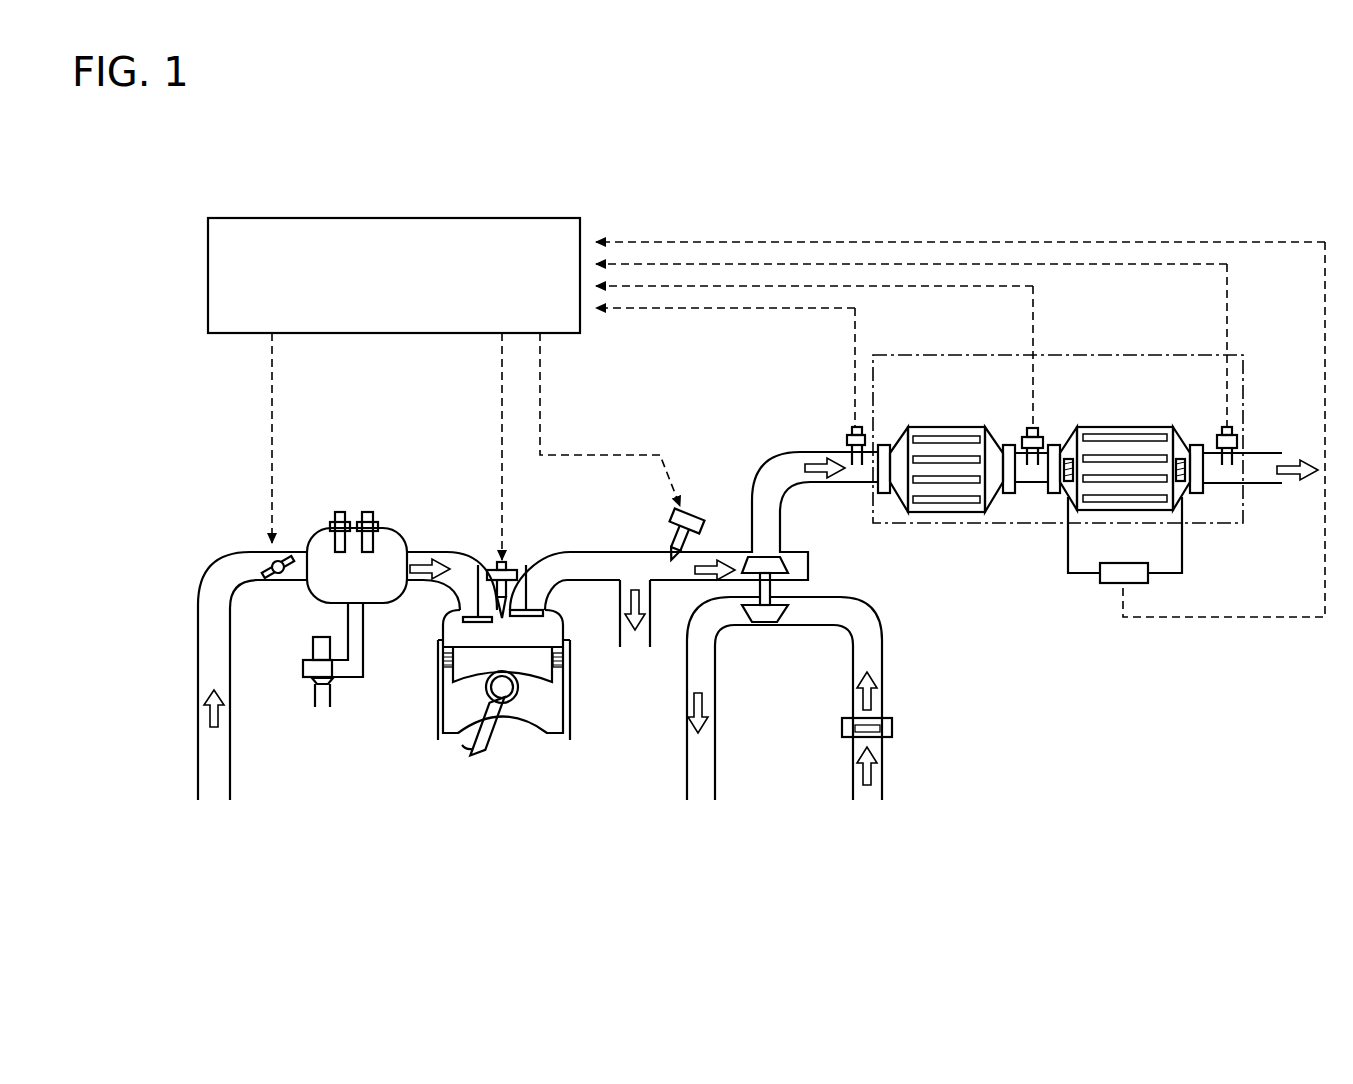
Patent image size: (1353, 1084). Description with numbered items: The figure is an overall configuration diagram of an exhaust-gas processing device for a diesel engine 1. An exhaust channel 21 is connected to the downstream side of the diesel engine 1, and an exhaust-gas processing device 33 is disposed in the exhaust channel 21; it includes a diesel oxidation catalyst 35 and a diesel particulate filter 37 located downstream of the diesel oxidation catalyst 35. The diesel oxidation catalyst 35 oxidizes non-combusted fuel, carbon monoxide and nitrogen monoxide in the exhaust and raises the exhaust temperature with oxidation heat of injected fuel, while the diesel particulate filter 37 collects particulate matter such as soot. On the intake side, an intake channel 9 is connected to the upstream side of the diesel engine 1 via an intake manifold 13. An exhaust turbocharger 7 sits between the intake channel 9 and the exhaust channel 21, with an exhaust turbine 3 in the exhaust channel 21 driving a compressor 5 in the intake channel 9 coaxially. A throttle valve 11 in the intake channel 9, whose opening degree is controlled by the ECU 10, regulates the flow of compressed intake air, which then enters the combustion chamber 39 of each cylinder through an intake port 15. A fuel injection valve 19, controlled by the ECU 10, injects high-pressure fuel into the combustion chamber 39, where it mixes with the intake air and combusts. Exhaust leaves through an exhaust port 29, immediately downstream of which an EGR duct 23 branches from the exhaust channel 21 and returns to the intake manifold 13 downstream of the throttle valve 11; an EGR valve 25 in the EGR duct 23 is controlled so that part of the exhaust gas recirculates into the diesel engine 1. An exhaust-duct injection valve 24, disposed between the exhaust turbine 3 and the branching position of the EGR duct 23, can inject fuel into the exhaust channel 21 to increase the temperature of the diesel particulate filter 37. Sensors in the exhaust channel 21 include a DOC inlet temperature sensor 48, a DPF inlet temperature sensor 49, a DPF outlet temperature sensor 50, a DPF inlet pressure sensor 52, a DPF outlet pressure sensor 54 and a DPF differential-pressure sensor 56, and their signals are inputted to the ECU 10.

The diesel engine 1 is at (418, 730).
The exhaust turbine 3 is at (775, 556).
The compressor 5 is at (770, 623).
The exhaust turbocharger 7 is at (818, 590).
The intake channel 9 is at (197, 650).
The ECU 10 is at (548, 218).
The throttle valve 11 is at (265, 575).
The intake manifold 13 is at (380, 607).
The intake port 15 is at (440, 583).
The fuel injection valve 19 is at (517, 560).
The exhaust channel 21 is at (645, 552).
The EGR duct 23 is at (330, 690).
The exhaust-duct injection valve 24 is at (693, 510).
The EGR valve 25 is at (313, 650).
The exhaust port 29 is at (577, 583).
The exhaust-gas processing device 33 is at (1155, 355).
The diesel oxidation catalyst 35 is at (925, 503).
The diesel particulate filter 37 is at (1092, 495).
The combustion chamber 39 is at (507, 632).
The DOC inlet temperature sensor 48 is at (848, 427).
The DPF inlet temperature sensor 49 is at (1024, 427).
The DPF outlet temperature sensor 50 is at (1234, 428).
The DPF inlet pressure sensor 52 is at (1066, 460).
The DPF outlet pressure sensor 54 is at (1178, 430).
The DPF differential-pressure sensor 56 is at (1128, 583).